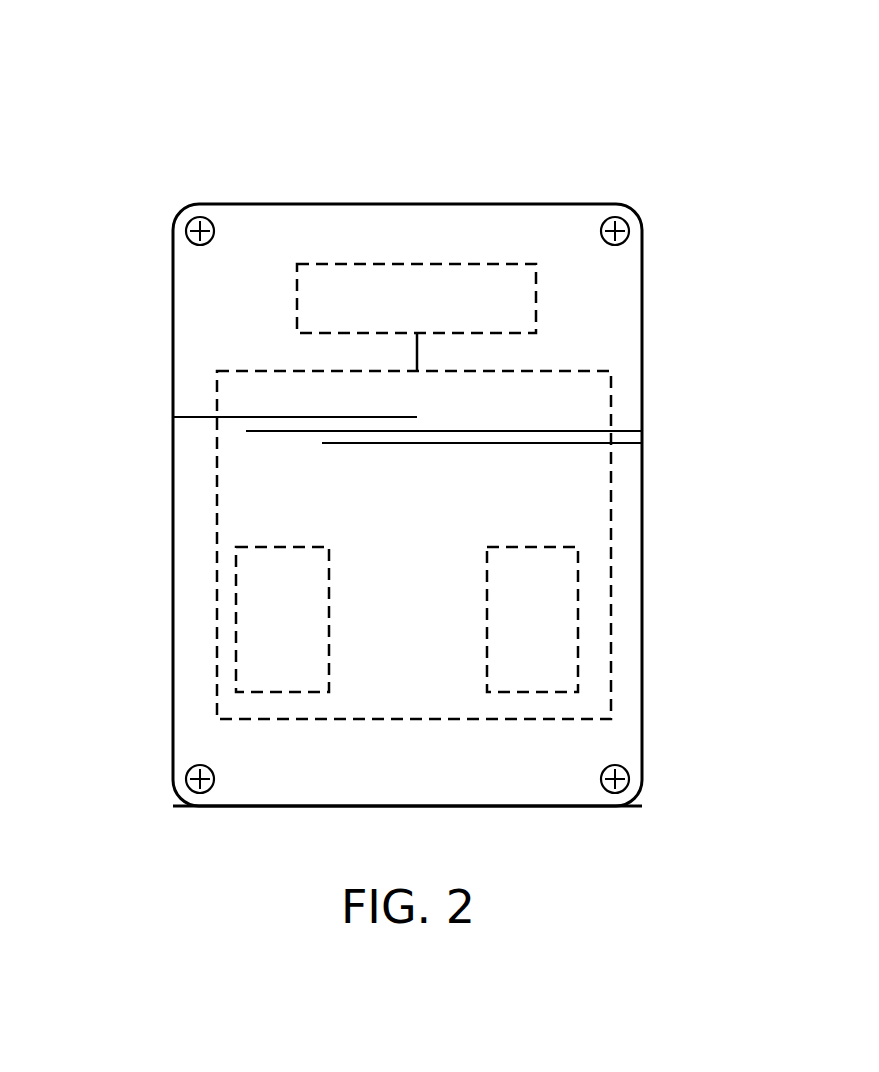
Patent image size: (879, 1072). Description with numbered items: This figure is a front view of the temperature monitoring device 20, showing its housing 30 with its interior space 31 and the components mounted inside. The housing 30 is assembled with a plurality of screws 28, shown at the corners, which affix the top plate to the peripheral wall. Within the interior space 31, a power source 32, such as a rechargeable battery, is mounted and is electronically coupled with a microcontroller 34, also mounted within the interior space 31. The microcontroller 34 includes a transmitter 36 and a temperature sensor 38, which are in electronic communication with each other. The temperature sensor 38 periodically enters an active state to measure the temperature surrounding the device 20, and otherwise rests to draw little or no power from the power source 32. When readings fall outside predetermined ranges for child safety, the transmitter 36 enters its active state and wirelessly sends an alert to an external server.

The temperature monitoring device 20 is at (214, 90).
The screws 28 is at (622, 232).
The housing 30 is at (540, 806).
The interior space 31 is at (205, 327).
The power source 32 is at (378, 287).
The microcontroller 34 is at (611, 404).
The transmitter 36 is at (567, 584).
The temperature sensor 38 is at (236, 592).